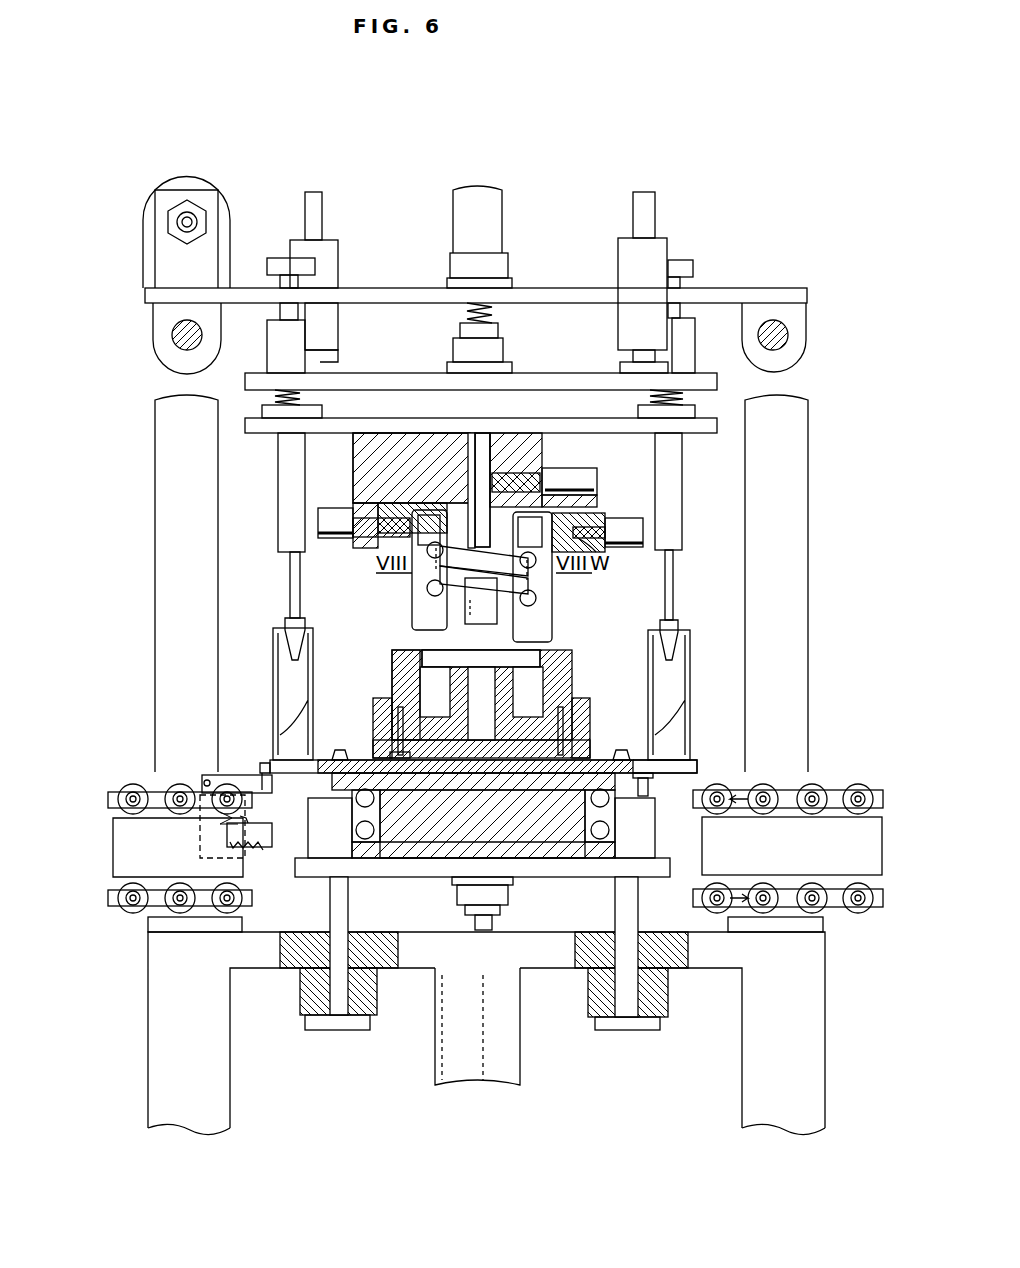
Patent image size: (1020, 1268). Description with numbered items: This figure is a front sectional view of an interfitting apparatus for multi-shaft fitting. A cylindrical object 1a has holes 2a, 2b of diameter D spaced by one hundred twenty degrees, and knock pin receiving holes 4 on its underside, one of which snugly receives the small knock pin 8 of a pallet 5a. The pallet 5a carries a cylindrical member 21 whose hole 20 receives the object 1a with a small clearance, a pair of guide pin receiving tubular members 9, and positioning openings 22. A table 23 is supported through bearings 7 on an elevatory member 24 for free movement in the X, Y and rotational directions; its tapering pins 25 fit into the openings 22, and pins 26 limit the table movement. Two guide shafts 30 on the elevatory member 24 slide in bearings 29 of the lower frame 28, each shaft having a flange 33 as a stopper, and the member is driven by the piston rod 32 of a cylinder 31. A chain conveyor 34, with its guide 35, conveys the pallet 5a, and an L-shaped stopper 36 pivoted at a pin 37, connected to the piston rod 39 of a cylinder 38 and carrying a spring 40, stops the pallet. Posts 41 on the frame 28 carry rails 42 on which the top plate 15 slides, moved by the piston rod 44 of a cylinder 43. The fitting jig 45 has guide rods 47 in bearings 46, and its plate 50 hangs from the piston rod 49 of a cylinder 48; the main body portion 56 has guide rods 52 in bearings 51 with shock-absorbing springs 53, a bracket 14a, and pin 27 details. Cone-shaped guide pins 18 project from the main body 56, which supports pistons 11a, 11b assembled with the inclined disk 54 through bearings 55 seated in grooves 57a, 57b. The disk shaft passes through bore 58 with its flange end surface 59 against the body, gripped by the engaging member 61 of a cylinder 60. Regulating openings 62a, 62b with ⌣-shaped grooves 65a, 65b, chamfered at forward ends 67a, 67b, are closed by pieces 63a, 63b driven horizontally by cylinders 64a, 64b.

The cylindrical object 1a is at (572, 664).
The hole 2a is at (418, 682).
The hole 2b is at (545, 662).
The knock pin receiving hole 4 is at (392, 706).
The pallet 5a is at (668, 764).
The bearing 7 is at (594, 828).
The knock pin 8 is at (392, 738).
The guide pin receiving tubular member 9 is at (690, 656).
The piston 11a is at (302, 630).
The piston 11b is at (545, 628).
The head block 14a is at (353, 450).
The top plate 15 is at (714, 290).
The guide pin 18 is at (670, 578).
The hole 20 is at (578, 710).
The cylindrical member 21 is at (572, 708).
The positioning opening 22 is at (622, 750).
The table 23 is at (578, 856).
The elevatory member 24 is at (646, 850).
The tapering pin 25 is at (625, 756).
The pin 26 is at (636, 802).
The pin 27 is at (650, 783).
The lower frame 28 is at (824, 986).
The bearing 29 is at (650, 994).
The guide shaft 30 is at (612, 986).
The cylinder 31 is at (520, 1016).
The piston rod 32 is at (476, 920).
The flange 33 is at (642, 1030).
The chain conveyor 34 is at (120, 792).
The chain guide 35 is at (113, 844).
The stopper 36 is at (262, 764).
The pin 37 is at (224, 776).
The cylinder 38 is at (272, 835).
The piston rod 39 is at (240, 806).
The spring 40 is at (262, 850).
The post 41 is at (156, 470).
The rail 42 is at (172, 335).
The cylinder 43 is at (188, 180).
The piston rod 44 is at (168, 222).
The fitting jig 45 is at (410, 354).
The bearing 46 is at (620, 254).
The guide rod 47 is at (656, 210).
The cylinder 48 is at (455, 218).
The piston rod 49 is at (494, 312).
The plate 50 is at (569, 380).
The bearing 51 is at (268, 356).
The guide rod 52 is at (280, 318).
The spring 53 is at (304, 398).
The inclined disk 54 is at (488, 620).
The bearing 55 is at (418, 624).
The main body portion 56 is at (542, 446).
The groove 57a is at (420, 600).
The groove 57b is at (540, 600).
The bore 58 is at (484, 433).
The end surface 59 is at (470, 500).
The cylinder 60 is at (598, 490).
The engaging member 61 is at (490, 472).
The regulating opening 62a is at (386, 538).
The regulating opening 62b is at (590, 520).
The piece 63a is at (400, 512).
The piece 63b is at (606, 512).
The cylinder 64a is at (328, 510).
The cylinder 64b is at (630, 548).
The ⌣-shaped groove 65a is at (408, 478).
The ⌣-shaped groove 65b is at (560, 490).
The chamfered forward end 67a is at (444, 612).
The chamfered forward end 67b is at (546, 578).